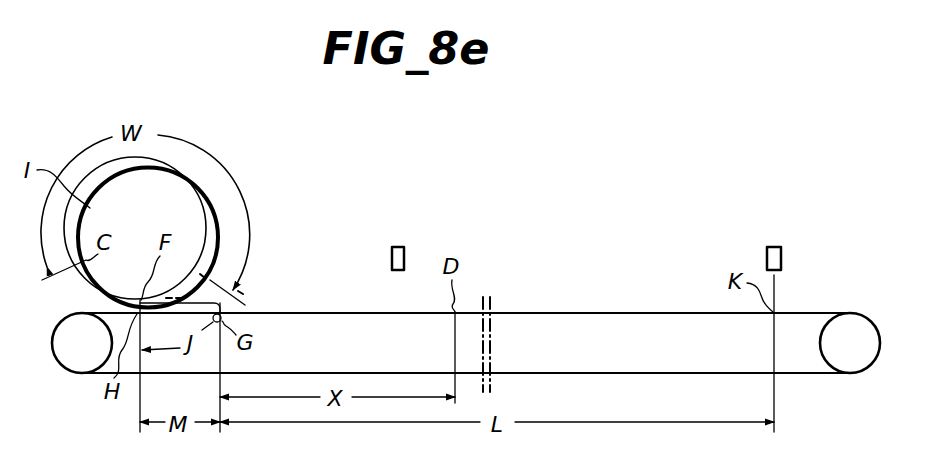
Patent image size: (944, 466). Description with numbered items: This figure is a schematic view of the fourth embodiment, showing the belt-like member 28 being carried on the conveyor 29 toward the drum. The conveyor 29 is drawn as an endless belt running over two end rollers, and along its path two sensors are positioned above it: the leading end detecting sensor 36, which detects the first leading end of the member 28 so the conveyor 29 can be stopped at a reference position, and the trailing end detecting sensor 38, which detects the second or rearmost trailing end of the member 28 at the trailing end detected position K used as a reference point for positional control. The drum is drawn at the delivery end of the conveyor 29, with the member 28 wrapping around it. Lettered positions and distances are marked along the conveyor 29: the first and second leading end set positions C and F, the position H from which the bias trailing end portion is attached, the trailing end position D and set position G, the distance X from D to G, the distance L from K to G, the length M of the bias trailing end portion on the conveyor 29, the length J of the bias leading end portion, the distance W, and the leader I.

The belt-like member 28 is at (153, 235).
The conveyor 29 is at (312, 312).
The leading end detecting sensor 36 is at (404, 252).
The trailing end detecting sensor 38 is at (767, 250).